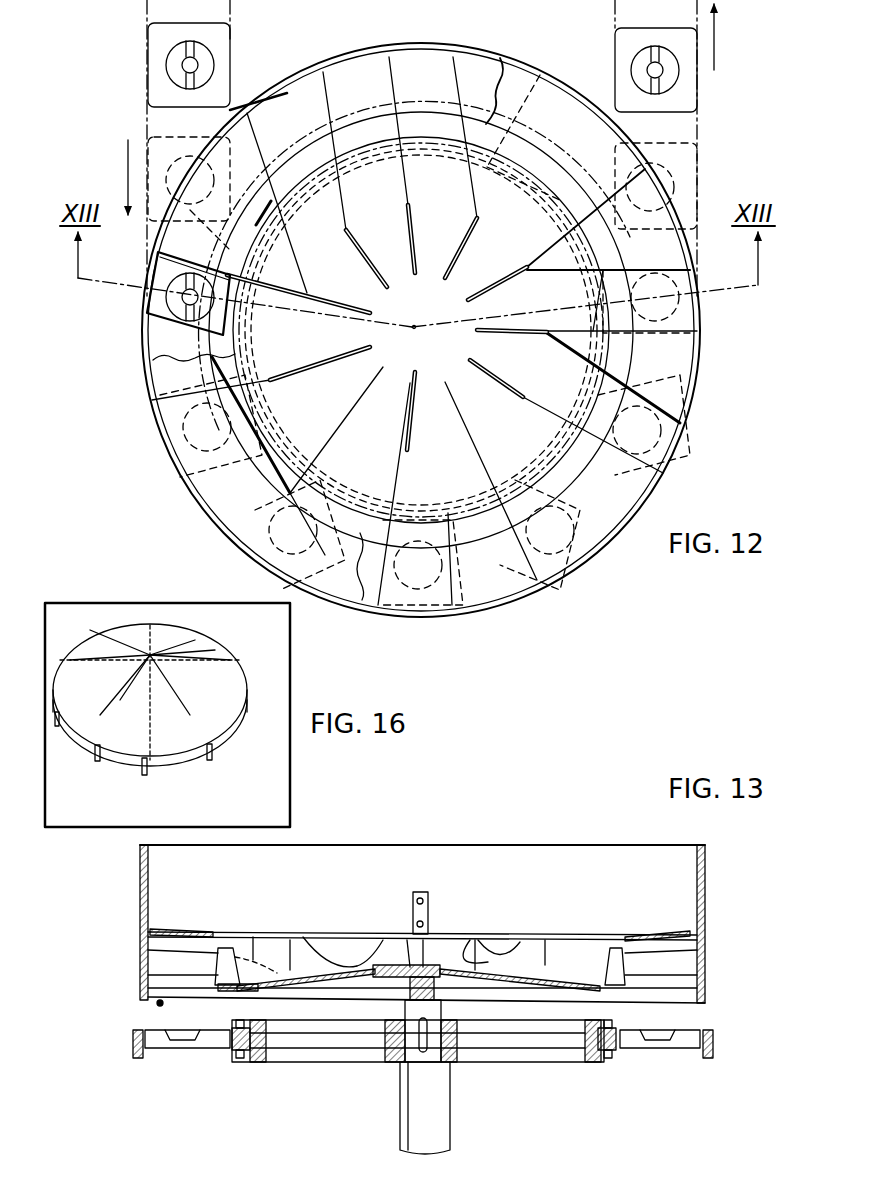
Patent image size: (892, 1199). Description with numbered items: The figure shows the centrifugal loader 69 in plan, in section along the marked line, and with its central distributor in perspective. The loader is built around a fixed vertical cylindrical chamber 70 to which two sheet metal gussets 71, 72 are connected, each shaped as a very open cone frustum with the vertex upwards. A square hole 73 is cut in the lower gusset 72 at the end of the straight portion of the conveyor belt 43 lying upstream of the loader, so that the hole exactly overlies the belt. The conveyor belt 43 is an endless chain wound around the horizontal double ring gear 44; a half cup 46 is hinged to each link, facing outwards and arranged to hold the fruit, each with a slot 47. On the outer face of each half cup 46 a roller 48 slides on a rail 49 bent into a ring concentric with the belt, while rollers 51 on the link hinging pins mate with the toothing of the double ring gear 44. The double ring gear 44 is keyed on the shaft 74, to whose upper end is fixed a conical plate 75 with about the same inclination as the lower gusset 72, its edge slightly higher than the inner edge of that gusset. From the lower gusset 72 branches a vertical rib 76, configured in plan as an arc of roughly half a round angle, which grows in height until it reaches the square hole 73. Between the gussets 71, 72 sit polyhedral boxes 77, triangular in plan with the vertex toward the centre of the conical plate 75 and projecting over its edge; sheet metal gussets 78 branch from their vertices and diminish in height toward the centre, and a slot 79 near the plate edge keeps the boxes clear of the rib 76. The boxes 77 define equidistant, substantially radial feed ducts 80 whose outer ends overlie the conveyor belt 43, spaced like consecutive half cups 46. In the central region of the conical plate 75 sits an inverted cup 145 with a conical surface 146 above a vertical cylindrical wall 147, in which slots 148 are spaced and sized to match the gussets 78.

In FIG. 13, the conveyor belt 43 is at (190, 1052).
In FIG. 13, the double ring gear 44 is at (528, 1060).
In FIG. 12, the half cup 46 is at (180, 98).
In FIG. 13, the half cup 46 is at (690, 1050).
In FIG. 12, the slot 47 is at (180, 52).
In FIG. 13, the slot 47 is at (662, 1048).
In FIG. 13, the roller 48 is at (135, 1045).
In FIG. 13, the rail 49 is at (136, 1060).
In FIG. 13, the rollers 51 is at (232, 1020).
In FIG. 12, the centrifugal loader 69 is at (160, 448).
In FIG. 13, the centrifugal loader 69 is at (500, 845).
In FIG. 12, the vertical cylindrical chamber 70 is at (150, 413).
In FIG. 13, the vertical cylindrical chamber 70 is at (140, 878).
In FIG. 12, the sheet metal gusset 71 is at (560, 100).
In FIG. 13, the sheet metal gusset 71 is at (275, 935).
In FIG. 13, the sheet metal gusset 72 is at (702, 1003).
In FIG. 12, the square hole 73 is at (150, 300).
In FIG. 13, the square hole 73 is at (150, 1005).
In FIG. 13, the shaft 74 is at (395, 1120).
In FIG. 12, the conical plate 75 is at (438, 358).
In FIG. 13, the conical plate 75 is at (330, 990).
In FIG. 12, the vertical rib 76 is at (268, 207).
In FIG. 13, the vertical rib 76 is at (215, 985).
In FIG. 12, the polyhedral boxes 77 is at (290, 93).
In FIG. 13, the polyhedral boxes 77 is at (245, 935).
In FIG. 12, the sheet metal gussets 78 is at (364, 300).
In FIG. 13, the sheet metal gussets 78 is at (355, 935).
In FIG. 13, the slot 79 is at (614, 948).
In FIG. 12, the feed ducts 80 is at (389, 194).
In FIG. 16, the inverted cup 145 is at (200, 640).
In FIG. 16, the conical surface 146 is at (230, 705).
In FIG. 16, the vertical cylindrical wall 147 is at (195, 765).
In FIG. 16, the slot 148 is at (125, 620).